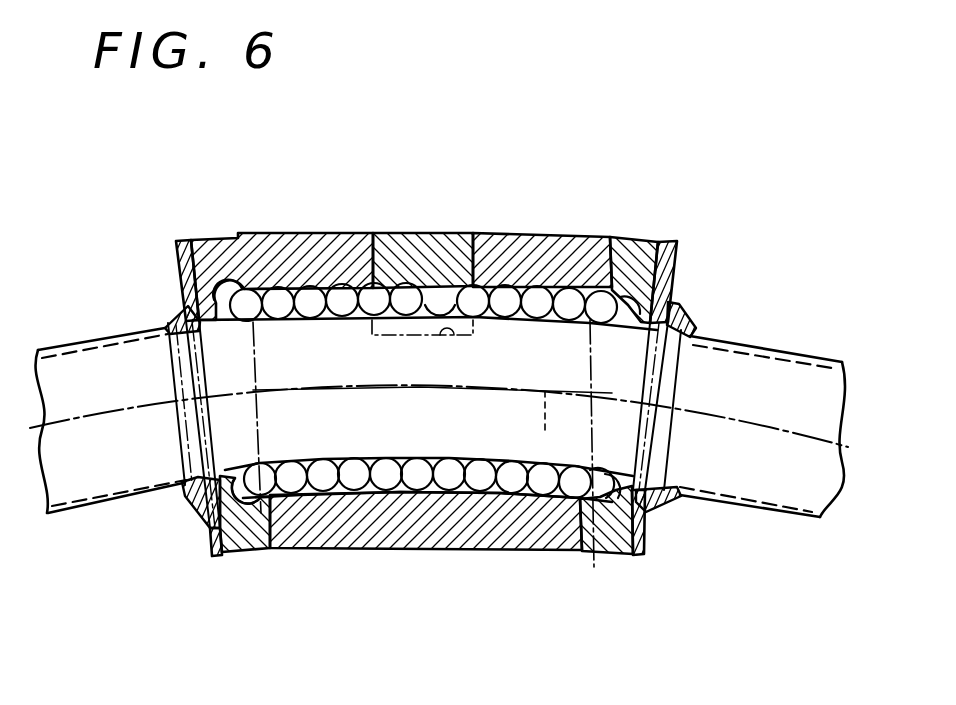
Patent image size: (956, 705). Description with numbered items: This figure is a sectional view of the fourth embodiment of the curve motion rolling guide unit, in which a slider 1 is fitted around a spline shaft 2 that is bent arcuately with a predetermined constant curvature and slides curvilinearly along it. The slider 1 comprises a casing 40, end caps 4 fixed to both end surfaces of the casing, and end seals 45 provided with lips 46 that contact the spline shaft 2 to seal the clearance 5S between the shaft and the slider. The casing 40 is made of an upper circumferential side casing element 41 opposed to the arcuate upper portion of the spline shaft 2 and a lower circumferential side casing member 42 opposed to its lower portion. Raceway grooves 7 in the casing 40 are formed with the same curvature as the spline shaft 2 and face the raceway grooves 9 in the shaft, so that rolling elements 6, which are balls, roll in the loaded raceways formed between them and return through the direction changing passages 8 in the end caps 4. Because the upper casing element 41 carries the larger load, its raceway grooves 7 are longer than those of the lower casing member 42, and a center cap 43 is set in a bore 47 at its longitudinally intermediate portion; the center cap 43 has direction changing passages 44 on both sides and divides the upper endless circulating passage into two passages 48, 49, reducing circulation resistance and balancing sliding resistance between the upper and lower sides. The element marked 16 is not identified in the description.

The slider 1 is at (441, 370).
The spline shaft 2 is at (87, 397).
The end cap 4 is at (238, 535).
The clearance 5S is at (187, 313).
The rolling element 6 is at (318, 292).
The raceway groove 7 is at (349, 292).
The direction changing passage 8 is at (222, 240).
The raceway groove 9 is at (117, 337).
The pipe end 16 is at (543, 440).
The casing 40 is at (424, 265).
The upper circumferential side casing element 41 is at (268, 252).
The lower circumferential side casing member 42 is at (410, 527).
The center cap 43 is at (418, 262).
The direction changing passage 44 is at (459, 286).
The end seal 45 is at (674, 266).
The lip 46 is at (690, 328).
The bore 47 is at (376, 295).
The endless circulating passage 48 is at (313, 297).
The endless circulating passage 49 is at (566, 262).